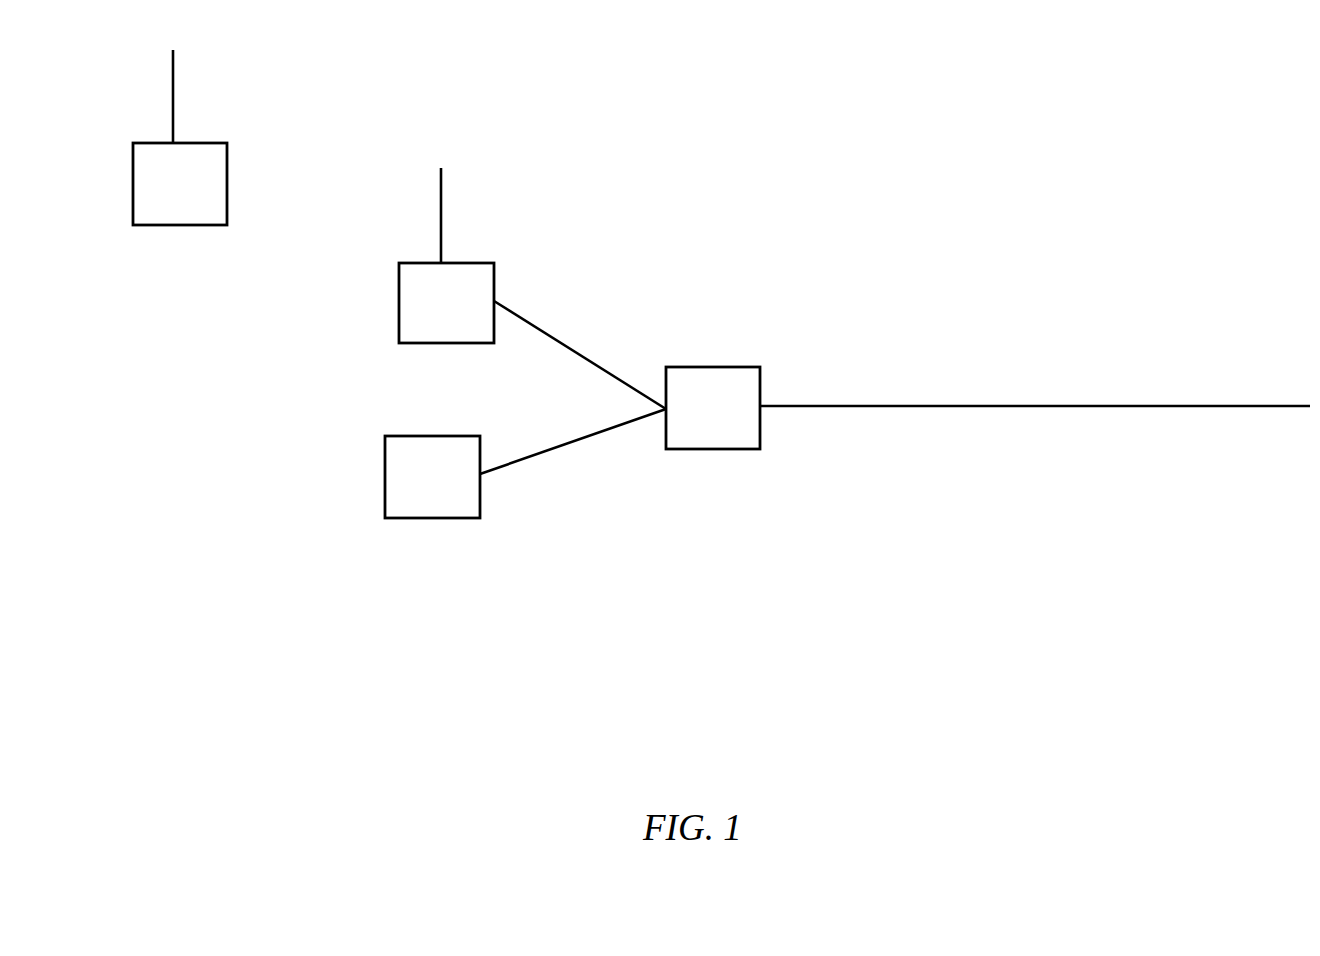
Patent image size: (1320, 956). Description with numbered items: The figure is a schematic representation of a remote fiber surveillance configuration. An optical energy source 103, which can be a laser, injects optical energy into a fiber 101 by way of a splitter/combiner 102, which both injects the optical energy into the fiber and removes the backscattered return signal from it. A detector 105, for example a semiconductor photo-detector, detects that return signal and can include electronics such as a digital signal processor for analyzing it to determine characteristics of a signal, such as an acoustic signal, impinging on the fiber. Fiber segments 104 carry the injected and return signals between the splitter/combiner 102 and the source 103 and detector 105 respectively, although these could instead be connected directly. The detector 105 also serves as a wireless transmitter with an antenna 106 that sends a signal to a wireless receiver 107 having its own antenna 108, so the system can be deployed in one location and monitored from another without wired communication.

The fiber 101 is at (1013, 406).
The splitter/combiner 102 is at (748, 449).
The optical energy source 103 is at (427, 518).
The fiber segments 104 is at (573, 342).
The detector 105 is at (467, 263).
The antenna 106 is at (441, 212).
The wireless receiver 107 is at (227, 180).
The antenna 108 is at (173, 77).